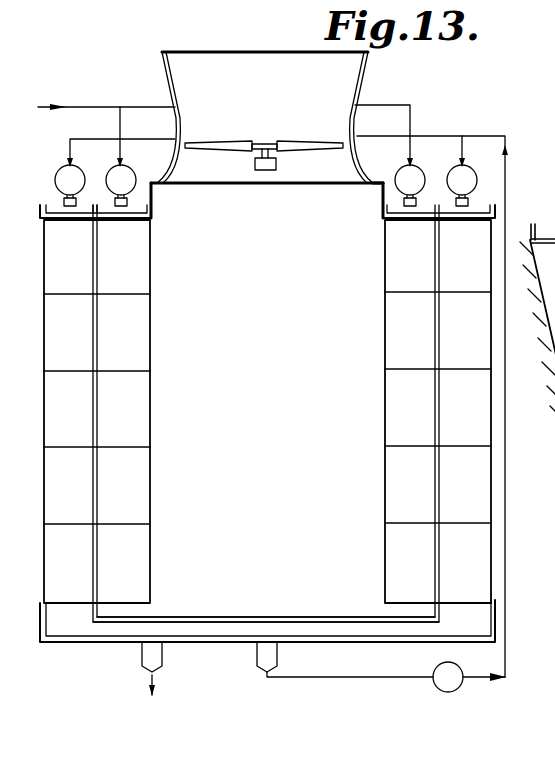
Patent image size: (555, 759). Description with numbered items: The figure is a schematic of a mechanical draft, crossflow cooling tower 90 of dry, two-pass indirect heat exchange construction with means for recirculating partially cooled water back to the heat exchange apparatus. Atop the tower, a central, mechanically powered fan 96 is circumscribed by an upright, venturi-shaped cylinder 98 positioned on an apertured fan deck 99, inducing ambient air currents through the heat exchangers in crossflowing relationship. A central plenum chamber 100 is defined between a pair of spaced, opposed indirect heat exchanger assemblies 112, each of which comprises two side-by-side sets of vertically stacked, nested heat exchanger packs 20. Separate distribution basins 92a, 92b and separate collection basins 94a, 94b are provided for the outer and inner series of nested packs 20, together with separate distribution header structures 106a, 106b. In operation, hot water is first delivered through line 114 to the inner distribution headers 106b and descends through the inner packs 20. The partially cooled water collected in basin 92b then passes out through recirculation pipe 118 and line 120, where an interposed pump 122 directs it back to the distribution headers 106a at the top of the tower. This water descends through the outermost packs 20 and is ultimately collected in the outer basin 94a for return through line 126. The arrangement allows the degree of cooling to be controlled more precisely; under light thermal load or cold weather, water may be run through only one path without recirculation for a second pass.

The crossflow cooling tower 90 is at (404, 80).
The venturi-shaped cylinder 98 is at (226, 58).
The fan 96 is at (283, 142).
The line 114 is at (90, 106).
The distribution basin 92a is at (40, 204).
The distribution basin 92b is at (136, 215).
The distribution header structure 106a is at (78, 166).
The distribution header structure 106b is at (128, 166).
The fan deck 99 is at (373, 183).
The indirect heat exchanger assembly 112 is at (152, 279).
The heat exchanger pack 20 is at (102, 410).
The plenum chamber 100 is at (262, 470).
The collection basin 94a is at (213, 644).
The collection basin 94b is at (305, 616).
The line 126 is at (140, 655).
The recirculation pipe 118 is at (278, 656).
The line 120 is at (340, 678).
The pump 122 is at (435, 682).